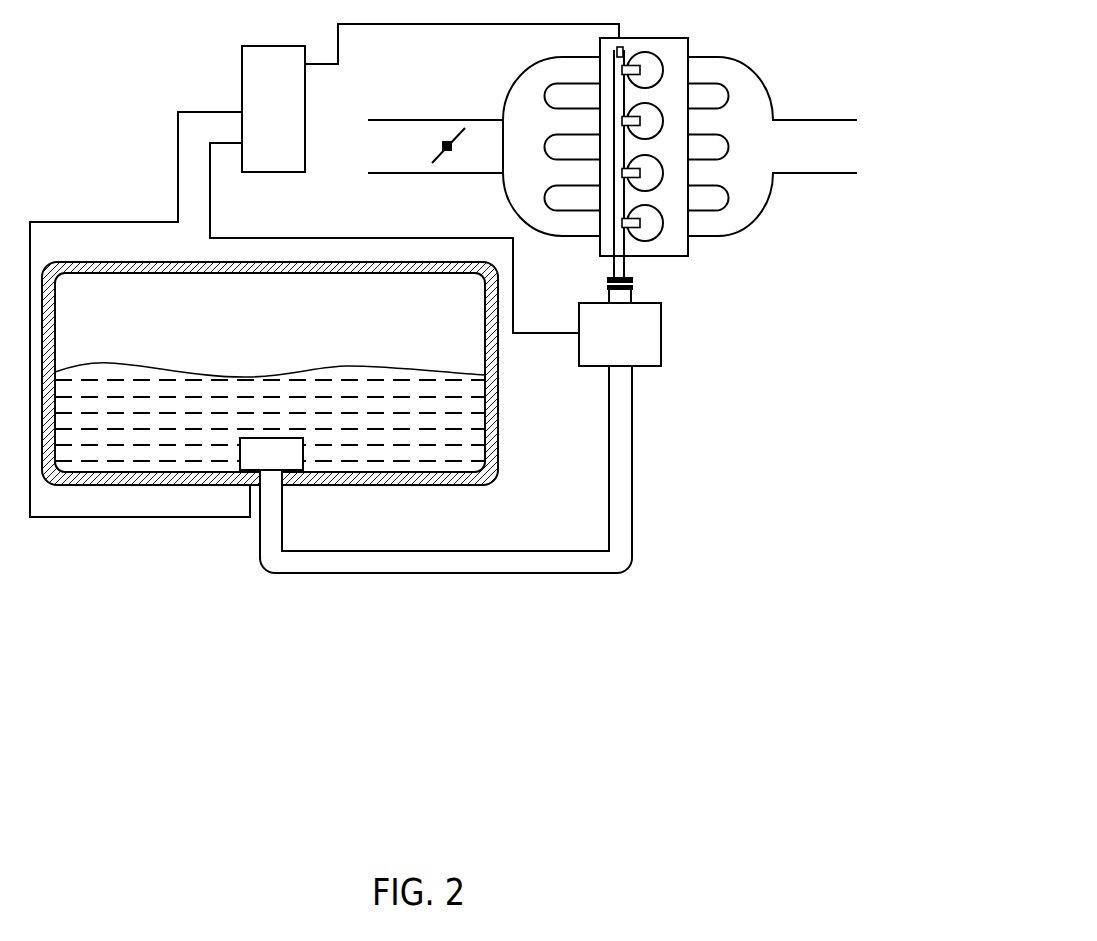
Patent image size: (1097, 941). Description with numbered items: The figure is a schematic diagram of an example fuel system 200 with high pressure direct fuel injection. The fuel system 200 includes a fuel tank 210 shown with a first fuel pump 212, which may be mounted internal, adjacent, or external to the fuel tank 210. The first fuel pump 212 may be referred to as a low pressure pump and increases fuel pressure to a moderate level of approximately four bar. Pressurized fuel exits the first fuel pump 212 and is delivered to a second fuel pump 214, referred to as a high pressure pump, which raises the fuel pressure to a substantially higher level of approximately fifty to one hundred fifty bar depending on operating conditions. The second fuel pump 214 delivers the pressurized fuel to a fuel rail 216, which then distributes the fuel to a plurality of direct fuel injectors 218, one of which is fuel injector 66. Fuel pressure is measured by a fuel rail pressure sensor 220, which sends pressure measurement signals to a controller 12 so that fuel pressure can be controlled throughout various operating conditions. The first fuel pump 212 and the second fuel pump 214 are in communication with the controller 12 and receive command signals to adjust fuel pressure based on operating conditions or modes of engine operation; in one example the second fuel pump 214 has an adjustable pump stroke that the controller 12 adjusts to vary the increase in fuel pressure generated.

The fuel system 200 is at (126, 60).
The controller 12 is at (273, 44).
The fuel tank 210 is at (100, 261).
The first fuel pump 212 is at (288, 473).
The second fuel pump 214 is at (662, 333).
The fuel rail 216 is at (616, 242).
The direct fuel injectors 218 is at (588, 45).
The fuel rail pressure sensor 220 is at (622, 46).
The fuel injector 66 is at (637, 238).